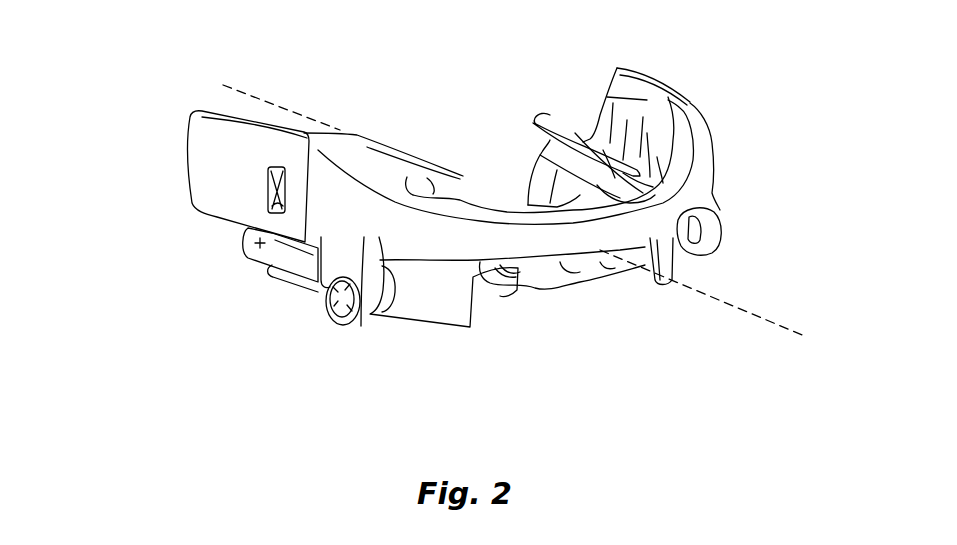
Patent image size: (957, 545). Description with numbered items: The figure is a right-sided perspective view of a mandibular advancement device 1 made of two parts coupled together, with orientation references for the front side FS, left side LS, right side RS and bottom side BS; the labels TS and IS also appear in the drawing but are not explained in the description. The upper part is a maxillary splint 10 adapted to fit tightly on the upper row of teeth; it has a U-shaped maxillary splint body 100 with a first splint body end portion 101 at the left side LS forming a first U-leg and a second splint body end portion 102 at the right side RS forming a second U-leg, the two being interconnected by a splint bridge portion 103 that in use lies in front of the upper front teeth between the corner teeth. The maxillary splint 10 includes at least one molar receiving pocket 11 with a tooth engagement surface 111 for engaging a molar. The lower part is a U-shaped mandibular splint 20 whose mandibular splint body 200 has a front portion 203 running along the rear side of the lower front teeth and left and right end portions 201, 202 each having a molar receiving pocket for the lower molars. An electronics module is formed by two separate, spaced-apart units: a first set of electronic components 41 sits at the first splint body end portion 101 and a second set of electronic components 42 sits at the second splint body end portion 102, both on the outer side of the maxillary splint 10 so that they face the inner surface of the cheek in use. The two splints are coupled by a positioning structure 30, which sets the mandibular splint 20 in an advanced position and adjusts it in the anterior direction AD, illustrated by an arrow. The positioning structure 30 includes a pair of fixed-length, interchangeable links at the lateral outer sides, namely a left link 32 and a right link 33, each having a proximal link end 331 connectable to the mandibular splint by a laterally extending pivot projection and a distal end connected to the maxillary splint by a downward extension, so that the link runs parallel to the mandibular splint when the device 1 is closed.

The mandibular advancement device 1 is at (661, 36).
The maxillary splint 10 is at (660, 68).
The molar receiving pocket 11 is at (537, 113).
The mandibular splint 20 is at (678, 263).
The positioning structure 30 is at (323, 315).
The left link 32 is at (361, 327).
The right link 33 is at (293, 261).
The first set of electronic components 41 is at (690, 93).
The second set of electronic components 42 is at (208, 139).
The maxillary splint body 100 is at (342, 125).
The first splint body end portion 101 is at (618, 70).
The second splint body end portion 102 is at (233, 109).
The splint bridge portion 103 is at (563, 246).
The tooth engagement surface 111 is at (627, 98).
The mandibular splint body 200 is at (460, 318).
The left end portion 201 is at (545, 160).
The right end portion 202 is at (312, 283).
The front portion 203 is at (515, 281).
The proximal link end 331 is at (253, 252).
The top surface TS is at (362, 74).
The front side FS is at (709, 293).
The inner surface IS is at (510, 167).
The left side LS is at (791, 109).
The right side RS is at (144, 252).
The bottom side BS is at (563, 385).
The anterior direction AD is at (738, 354).